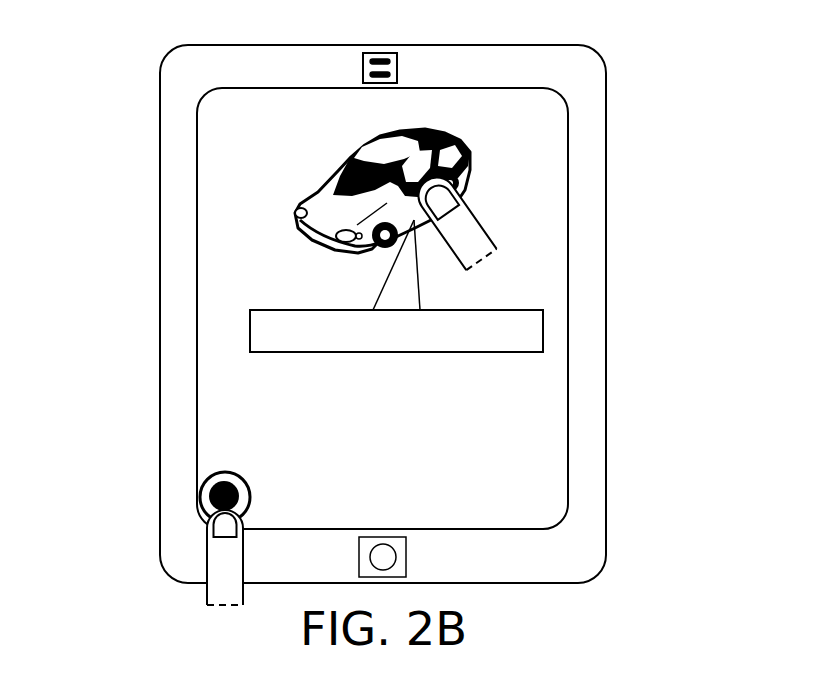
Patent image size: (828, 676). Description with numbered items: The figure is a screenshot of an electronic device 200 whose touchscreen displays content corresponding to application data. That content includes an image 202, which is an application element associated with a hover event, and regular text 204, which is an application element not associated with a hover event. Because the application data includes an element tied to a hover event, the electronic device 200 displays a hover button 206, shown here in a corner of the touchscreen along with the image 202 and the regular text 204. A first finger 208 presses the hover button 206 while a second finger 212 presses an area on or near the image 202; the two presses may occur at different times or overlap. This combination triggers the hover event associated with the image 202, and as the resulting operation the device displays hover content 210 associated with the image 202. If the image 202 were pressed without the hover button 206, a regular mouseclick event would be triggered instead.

The electronic device 200 is at (112, 59).
The image 202 is at (467, 153).
The regular text 204 is at (220, 410).
The hover button 206 is at (212, 475).
The first finger 208 is at (207, 563).
The hover content 210 is at (545, 320).
The second finger 212 is at (480, 222).